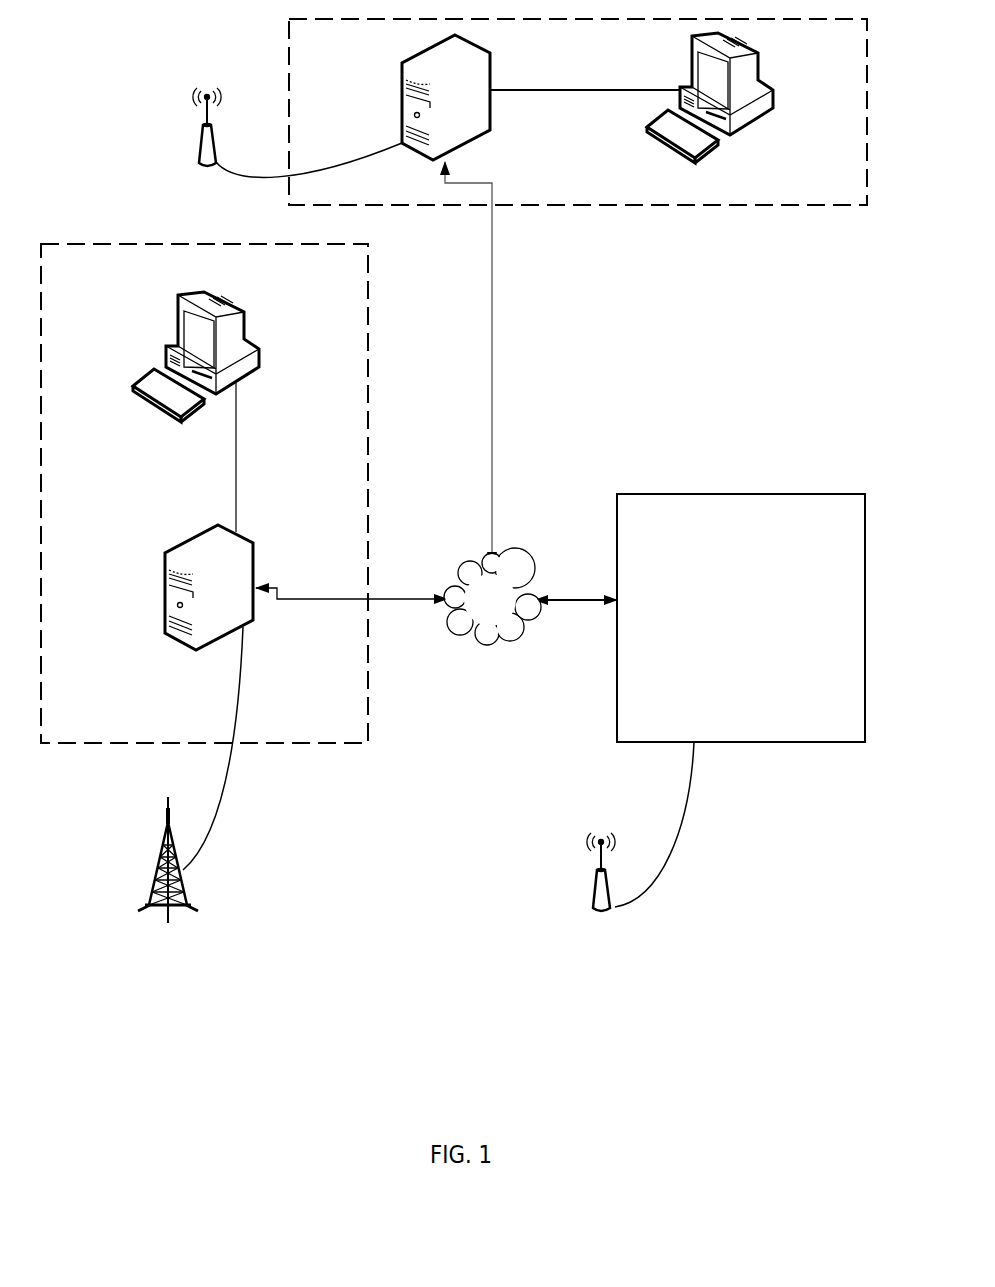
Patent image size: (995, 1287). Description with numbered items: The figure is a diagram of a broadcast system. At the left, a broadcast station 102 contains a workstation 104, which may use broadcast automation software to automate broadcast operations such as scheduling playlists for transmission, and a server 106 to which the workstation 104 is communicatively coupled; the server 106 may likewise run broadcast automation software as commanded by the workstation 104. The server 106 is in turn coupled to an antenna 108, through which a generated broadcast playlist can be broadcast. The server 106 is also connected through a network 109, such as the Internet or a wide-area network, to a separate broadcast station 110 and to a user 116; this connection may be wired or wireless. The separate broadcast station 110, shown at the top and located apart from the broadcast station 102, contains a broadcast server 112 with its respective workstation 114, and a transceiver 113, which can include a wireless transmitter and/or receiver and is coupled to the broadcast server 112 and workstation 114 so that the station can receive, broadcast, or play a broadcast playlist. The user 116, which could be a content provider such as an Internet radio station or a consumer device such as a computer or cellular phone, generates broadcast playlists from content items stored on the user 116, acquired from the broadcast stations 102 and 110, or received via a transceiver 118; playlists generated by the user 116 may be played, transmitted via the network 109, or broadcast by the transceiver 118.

The broadcast station 102 is at (88, 270).
The workstation 104 is at (262, 345).
The server 106 is at (253, 543).
The antenna 108 is at (150, 875).
The network 109 is at (492, 650).
The separate broadcast station 110 is at (338, 45).
The broadcast server 112 is at (400, 81).
The transceiver 113 is at (200, 143).
The workstation 114 is at (762, 67).
The user 116 is at (664, 520).
The transceiver 118 is at (590, 888).